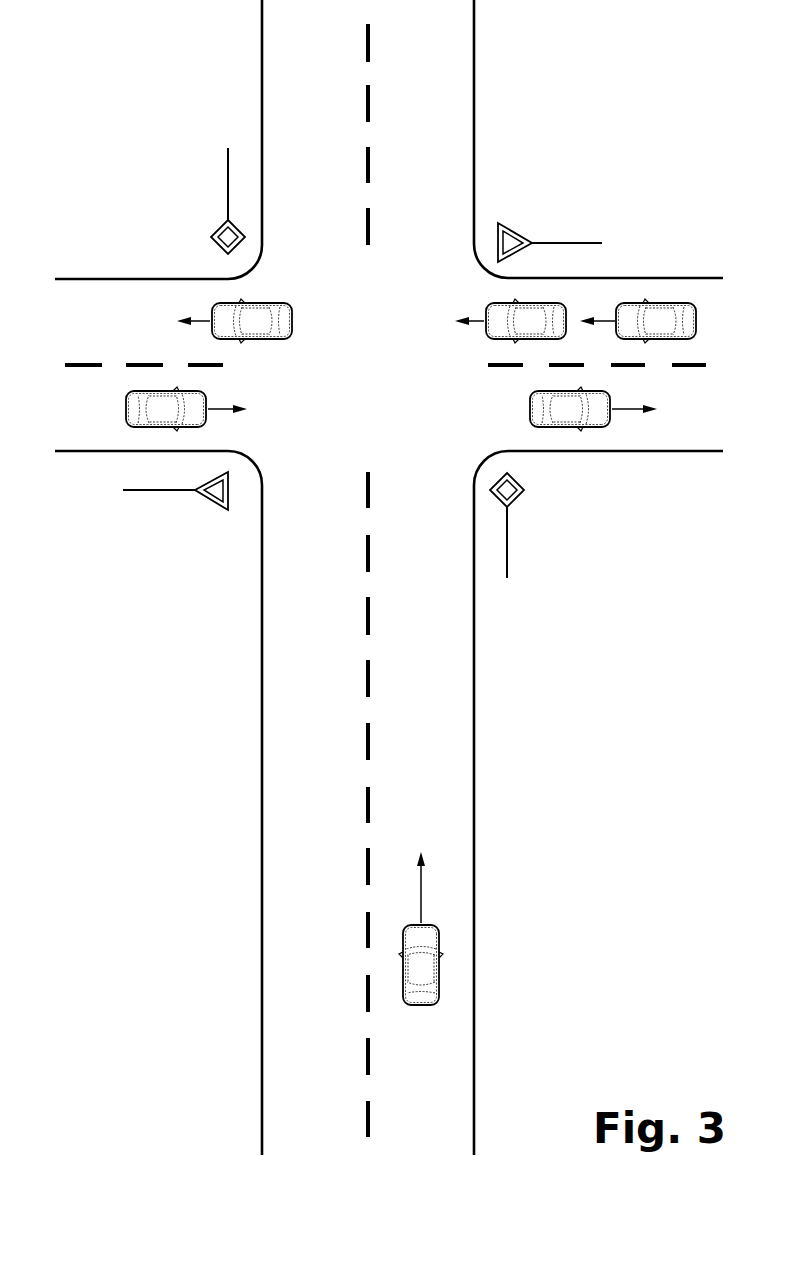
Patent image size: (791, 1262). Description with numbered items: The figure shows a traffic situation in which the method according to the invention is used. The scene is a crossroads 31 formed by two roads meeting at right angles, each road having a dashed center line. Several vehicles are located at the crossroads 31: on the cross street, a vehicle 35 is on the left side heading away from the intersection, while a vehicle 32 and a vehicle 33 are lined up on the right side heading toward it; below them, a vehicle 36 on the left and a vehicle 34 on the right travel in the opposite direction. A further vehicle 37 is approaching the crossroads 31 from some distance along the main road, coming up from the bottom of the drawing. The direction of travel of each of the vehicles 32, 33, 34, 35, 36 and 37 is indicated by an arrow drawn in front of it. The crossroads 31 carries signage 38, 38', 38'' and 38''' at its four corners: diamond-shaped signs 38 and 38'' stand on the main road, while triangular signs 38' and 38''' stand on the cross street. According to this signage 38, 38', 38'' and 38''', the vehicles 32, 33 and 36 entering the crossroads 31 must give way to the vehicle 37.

The crossroads 31 is at (450, 245).
The vehicle 32 is at (567, 310).
The vehicle 33 is at (688, 306).
The vehicle 34 is at (567, 427).
The vehicle 35 is at (293, 314).
The vehicle 36 is at (126, 412).
The vehicle 37 is at (421, 1005).
The signage 38 is at (540, 526).
The signage 38' is at (550, 206).
The signage 38'' is at (185, 199).
The signage 38''' is at (175, 525).